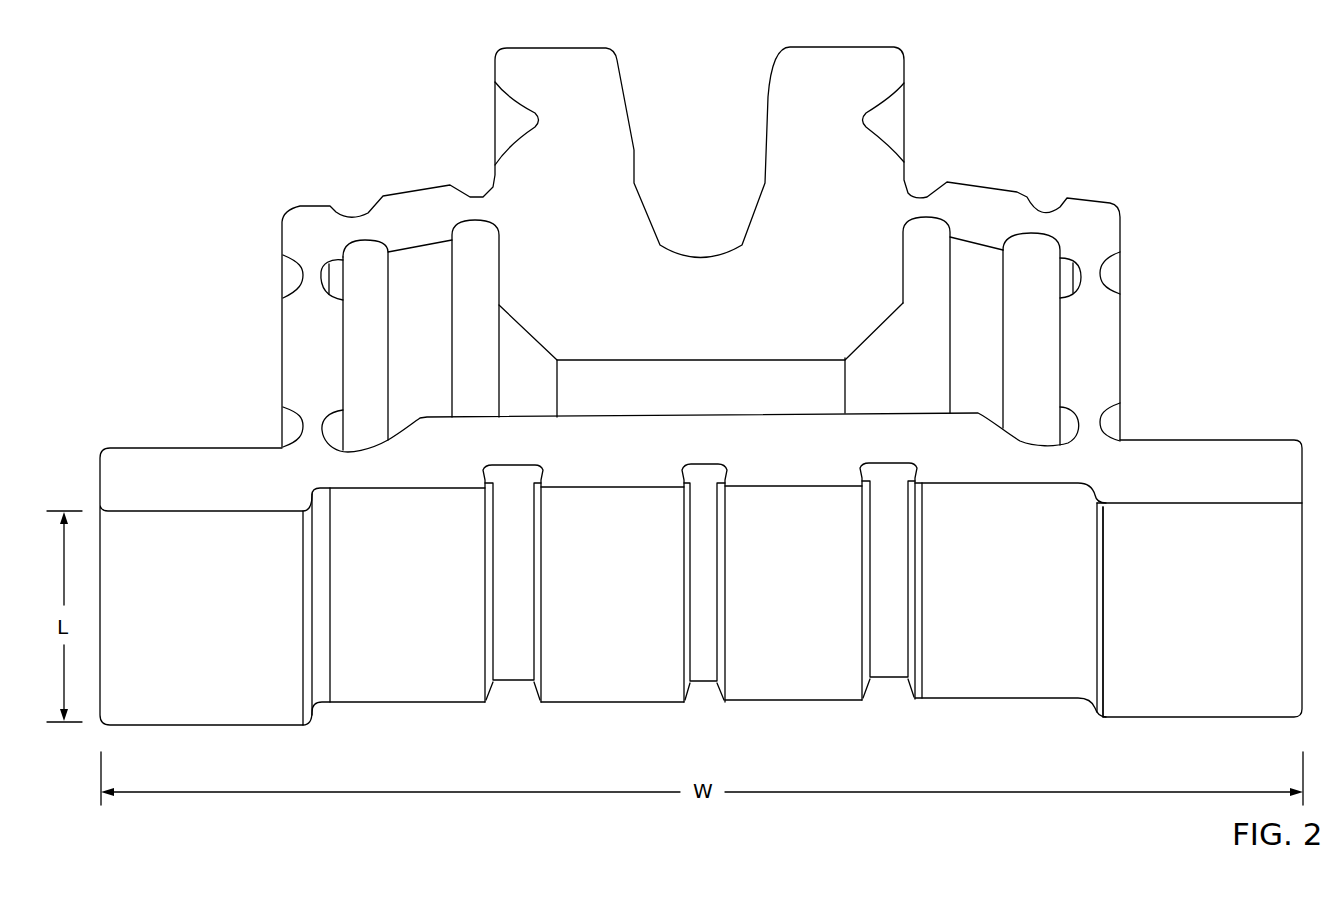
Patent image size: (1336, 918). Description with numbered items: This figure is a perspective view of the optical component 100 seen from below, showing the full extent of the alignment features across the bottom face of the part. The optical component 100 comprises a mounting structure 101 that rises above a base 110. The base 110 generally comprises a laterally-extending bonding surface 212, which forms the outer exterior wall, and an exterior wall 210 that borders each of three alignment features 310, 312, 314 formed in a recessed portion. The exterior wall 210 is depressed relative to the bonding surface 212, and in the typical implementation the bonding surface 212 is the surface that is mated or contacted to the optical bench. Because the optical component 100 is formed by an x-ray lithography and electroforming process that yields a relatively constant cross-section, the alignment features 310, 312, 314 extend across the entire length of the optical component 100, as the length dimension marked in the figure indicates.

The optical component 100 is at (1038, 82).
The mounting structure 101 is at (980, 184).
The base 110 is at (1160, 438).
The exterior wall 210 is at (995, 696).
The bonding surface 212 is at (1163, 716).
The alignment feature 310 is at (515, 674).
The alignment feature 312 is at (703, 674).
The alignment feature 314 is at (890, 672).